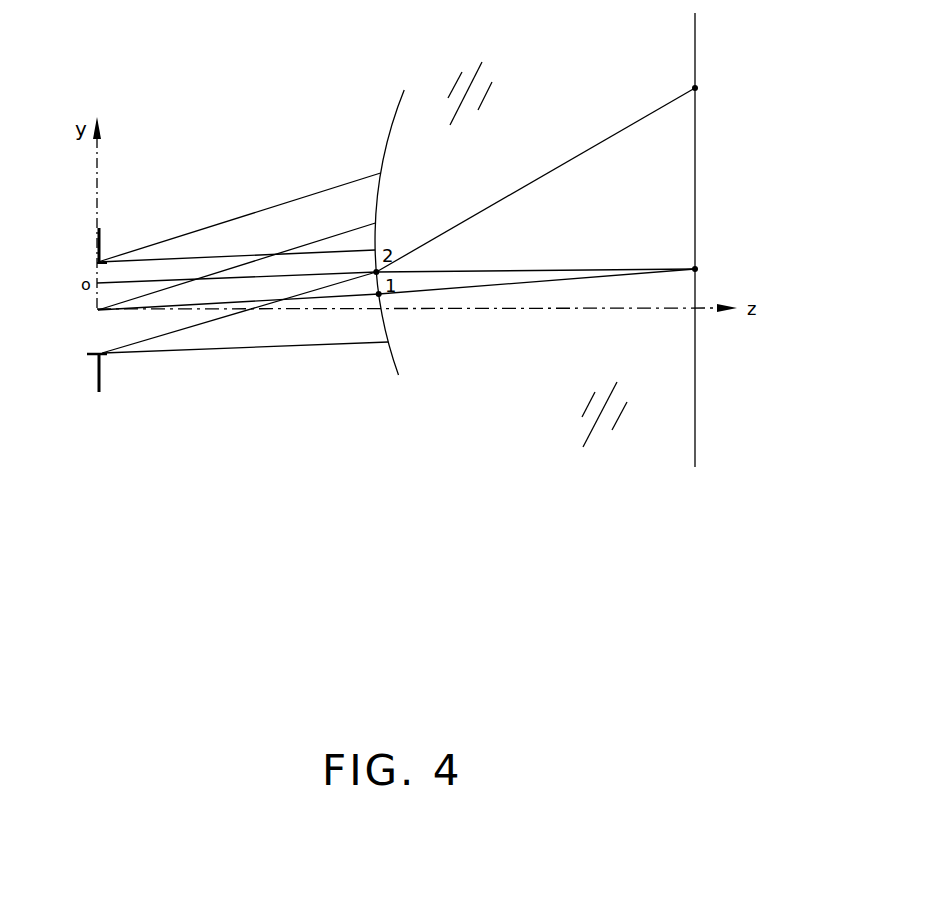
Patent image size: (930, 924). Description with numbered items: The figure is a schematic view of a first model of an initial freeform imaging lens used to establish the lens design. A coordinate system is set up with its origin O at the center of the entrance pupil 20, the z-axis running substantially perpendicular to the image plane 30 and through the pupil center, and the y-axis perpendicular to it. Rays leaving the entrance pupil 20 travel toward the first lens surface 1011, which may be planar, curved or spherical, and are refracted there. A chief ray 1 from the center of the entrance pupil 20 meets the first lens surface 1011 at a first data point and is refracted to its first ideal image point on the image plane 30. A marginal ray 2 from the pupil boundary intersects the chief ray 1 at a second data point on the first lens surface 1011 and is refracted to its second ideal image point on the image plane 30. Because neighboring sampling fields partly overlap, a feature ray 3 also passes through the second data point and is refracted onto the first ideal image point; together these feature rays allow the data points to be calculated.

The entrance pupil 20 is at (89, 269).
The image plane 30 is at (696, 34).
The first lens surface 1011 is at (392, 126).
The chief ray 1 is at (537, 290).
The marginal ray 2 is at (545, 188).
The feature ray 3 is at (571, 268).